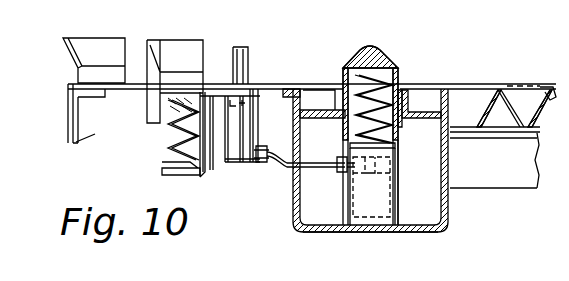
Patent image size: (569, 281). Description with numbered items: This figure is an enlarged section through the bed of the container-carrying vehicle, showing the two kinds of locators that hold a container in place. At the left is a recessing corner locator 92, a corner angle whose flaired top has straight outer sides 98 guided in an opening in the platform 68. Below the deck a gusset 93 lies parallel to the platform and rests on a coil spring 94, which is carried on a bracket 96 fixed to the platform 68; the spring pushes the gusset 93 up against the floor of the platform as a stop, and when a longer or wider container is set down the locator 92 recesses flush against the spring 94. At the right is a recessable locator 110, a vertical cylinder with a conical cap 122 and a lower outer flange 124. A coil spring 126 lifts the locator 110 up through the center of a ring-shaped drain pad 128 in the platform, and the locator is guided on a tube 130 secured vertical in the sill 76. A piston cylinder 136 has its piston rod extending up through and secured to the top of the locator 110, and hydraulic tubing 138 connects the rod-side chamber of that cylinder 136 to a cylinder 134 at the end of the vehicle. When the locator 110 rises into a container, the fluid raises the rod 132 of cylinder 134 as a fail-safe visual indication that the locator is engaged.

The platform 68 is at (318, 86).
The sill 76 is at (300, 233).
The corner locator 92 is at (188, 33).
The gusset 93 is at (167, 120).
The coil spring 94 is at (171, 149).
The bracket 96 is at (203, 174).
The straight outer sides 98 is at (142, 62).
The recessable locator 110 is at (423, 110).
The conical cap 122 is at (385, 53).
The lower outer flange 124 is at (397, 143).
The coil spring 126 is at (397, 148).
The ring-shaped drain pad 128 is at (442, 81).
The tube 130 is at (400, 122).
The rod 132 is at (255, 36).
The cylinder 134 is at (242, 163).
The piston cylinder 136 is at (395, 200).
The hydraulic tubing 138 is at (287, 168).